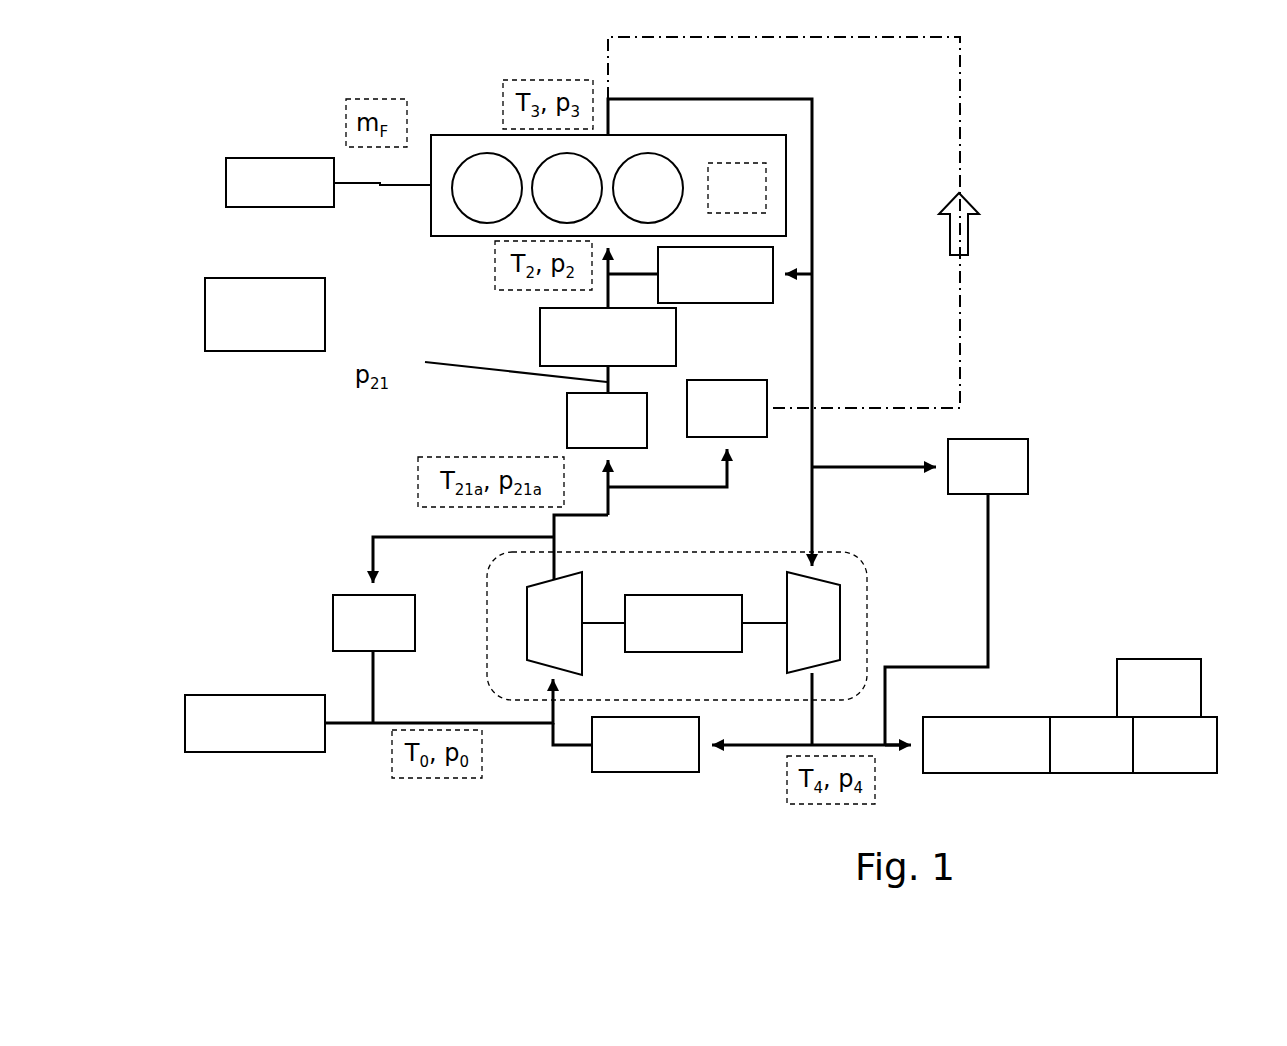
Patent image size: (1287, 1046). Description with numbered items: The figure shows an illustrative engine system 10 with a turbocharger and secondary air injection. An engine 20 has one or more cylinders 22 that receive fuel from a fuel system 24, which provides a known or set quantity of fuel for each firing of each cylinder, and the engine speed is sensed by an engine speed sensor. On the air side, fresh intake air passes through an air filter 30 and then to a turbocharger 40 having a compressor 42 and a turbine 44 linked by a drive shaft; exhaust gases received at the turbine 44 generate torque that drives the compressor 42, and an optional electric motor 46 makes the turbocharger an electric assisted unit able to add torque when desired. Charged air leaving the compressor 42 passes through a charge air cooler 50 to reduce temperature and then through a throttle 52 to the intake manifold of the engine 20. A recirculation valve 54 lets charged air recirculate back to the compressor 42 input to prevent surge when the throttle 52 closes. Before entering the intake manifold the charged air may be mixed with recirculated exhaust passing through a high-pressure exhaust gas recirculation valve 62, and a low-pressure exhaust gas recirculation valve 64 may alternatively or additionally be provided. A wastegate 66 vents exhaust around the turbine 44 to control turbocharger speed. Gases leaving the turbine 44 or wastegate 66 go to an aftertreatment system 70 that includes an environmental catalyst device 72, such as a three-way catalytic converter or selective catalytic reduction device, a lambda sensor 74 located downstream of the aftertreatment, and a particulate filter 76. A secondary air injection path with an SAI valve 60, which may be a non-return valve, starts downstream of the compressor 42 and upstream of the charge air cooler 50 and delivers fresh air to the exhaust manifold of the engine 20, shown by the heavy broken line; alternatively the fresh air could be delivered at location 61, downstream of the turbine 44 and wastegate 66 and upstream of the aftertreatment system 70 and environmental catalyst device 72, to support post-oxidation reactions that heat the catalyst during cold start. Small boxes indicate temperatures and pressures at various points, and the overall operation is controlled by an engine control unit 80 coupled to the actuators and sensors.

The system 10 is at (864, 128).
The engine 20 is at (463, 140).
The cylinders 22 is at (462, 203).
The fuel system 24 is at (277, 167).
The air filter 30 is at (250, 742).
The turbocharger 40 is at (858, 638).
The compressor 42 is at (577, 587).
The turbine 44 is at (825, 582).
The electric motor 46 is at (678, 602).
The charge air cooler 50 is at (567, 427).
The throttle 52 is at (540, 327).
The recirculation valve 54 is at (352, 602).
The SAI valve 60 is at (753, 390).
The second location 61 is at (900, 732).
The high-pressure exhaust gas recirculation valve 62 is at (763, 265).
The low-pressure exhaust gas recirculation valve 64 is at (620, 762).
The wastegate 66 is at (967, 438).
The aftertreatment system 70 is at (1028, 725).
The environmental catalyst device 72 is at (1060, 766).
The lambda sensor 74 is at (1137, 675).
The particulate filter 76 is at (1143, 768).
The engine control unit 80 is at (282, 285).